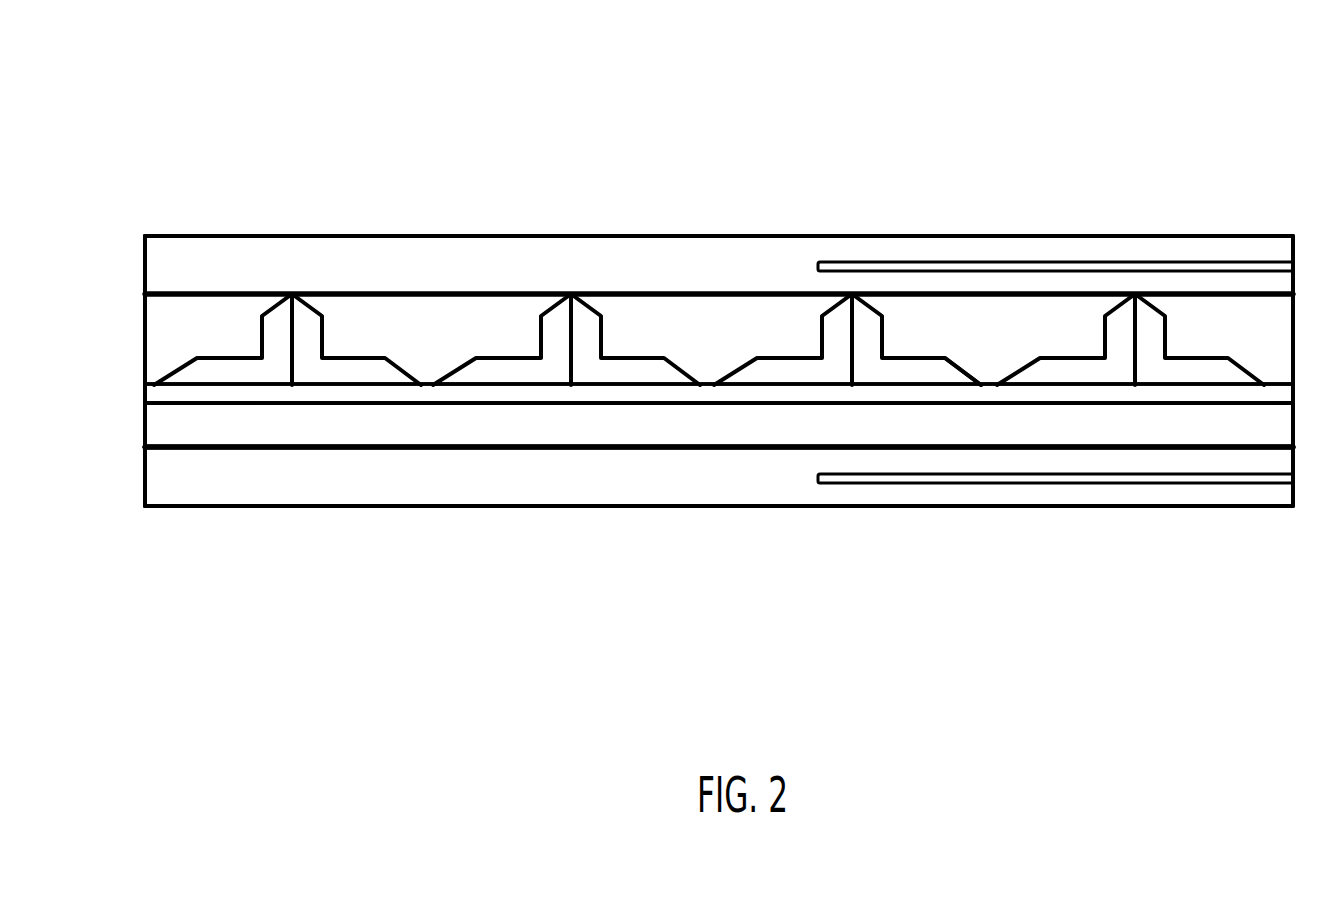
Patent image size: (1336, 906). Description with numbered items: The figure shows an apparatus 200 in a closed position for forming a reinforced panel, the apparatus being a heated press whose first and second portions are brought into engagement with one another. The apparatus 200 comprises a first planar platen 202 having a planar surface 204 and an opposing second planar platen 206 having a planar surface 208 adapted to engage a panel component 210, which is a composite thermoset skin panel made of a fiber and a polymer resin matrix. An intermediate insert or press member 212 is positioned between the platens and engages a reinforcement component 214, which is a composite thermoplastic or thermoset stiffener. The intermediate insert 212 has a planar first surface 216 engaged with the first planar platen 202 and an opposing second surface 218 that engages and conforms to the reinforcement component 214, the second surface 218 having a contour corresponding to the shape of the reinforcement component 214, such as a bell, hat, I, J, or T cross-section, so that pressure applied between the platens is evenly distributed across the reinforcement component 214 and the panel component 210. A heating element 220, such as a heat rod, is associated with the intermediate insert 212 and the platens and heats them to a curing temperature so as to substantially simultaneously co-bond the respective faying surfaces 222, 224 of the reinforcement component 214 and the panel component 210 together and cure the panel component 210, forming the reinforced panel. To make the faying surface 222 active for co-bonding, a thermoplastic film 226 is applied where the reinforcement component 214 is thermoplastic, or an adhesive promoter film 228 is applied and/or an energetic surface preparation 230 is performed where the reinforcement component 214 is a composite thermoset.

The apparatus 200 is at (837, 135).
The first planar platen 202 is at (733, 280).
The planar surface 204 is at (719, 181).
The second planar platen 206 is at (735, 497).
The planar surface 208 is at (242, 450).
The panel component 210 is at (735, 438).
The intermediate insert 212 is at (144, 326).
The reinforcement component 214 is at (482, 370).
The planar first surface 216 is at (213, 292).
The second surface 218 is at (960, 374).
The heating element 220 is at (1015, 265).
The faying surface 222 is at (348, 386).
The faying surface 224 is at (472, 405).
The thermoplastic film 226 is at (719, 514).
The adhesive promoter film 228 is at (719, 514).
The energetic surface preparation 230 is at (612, 393).